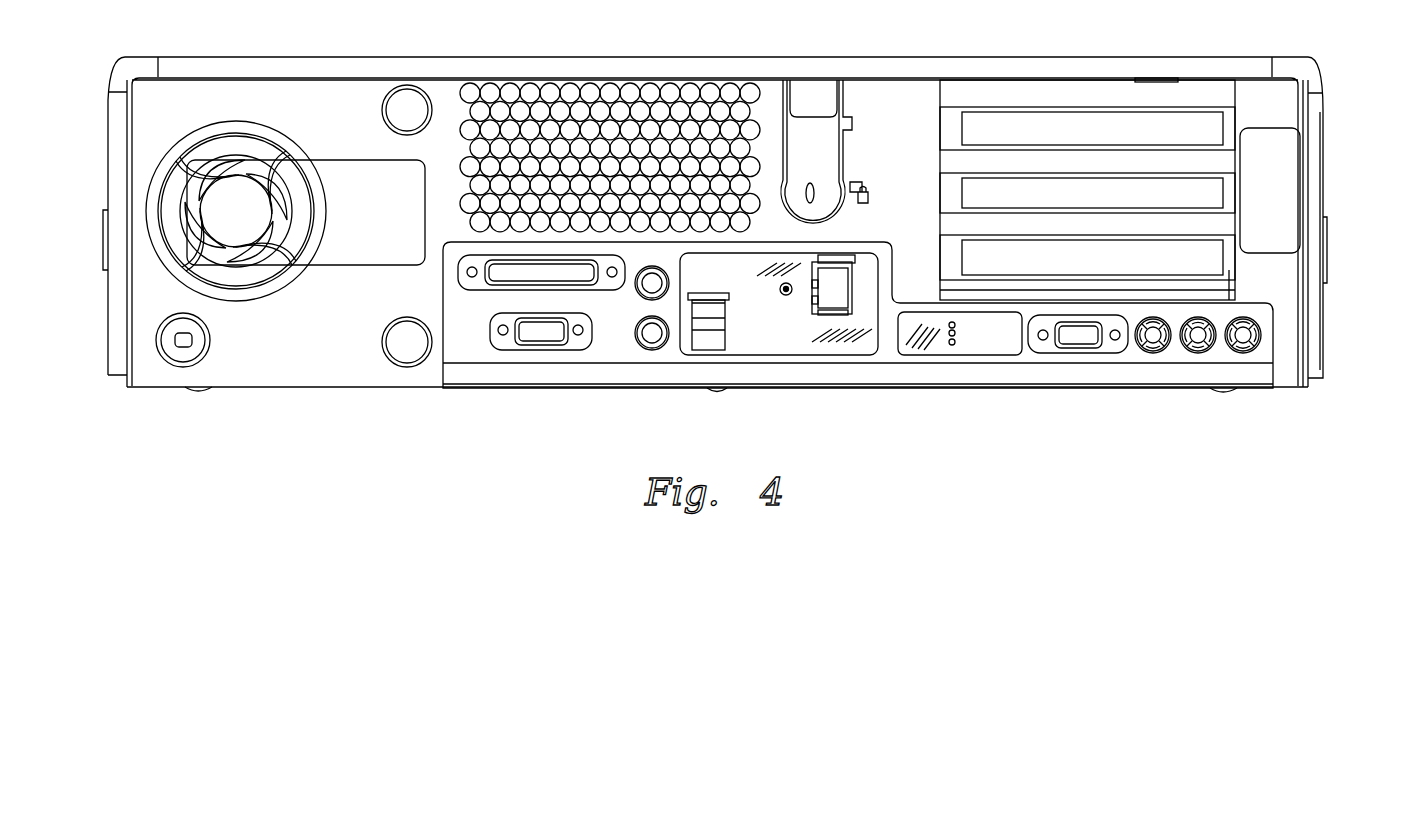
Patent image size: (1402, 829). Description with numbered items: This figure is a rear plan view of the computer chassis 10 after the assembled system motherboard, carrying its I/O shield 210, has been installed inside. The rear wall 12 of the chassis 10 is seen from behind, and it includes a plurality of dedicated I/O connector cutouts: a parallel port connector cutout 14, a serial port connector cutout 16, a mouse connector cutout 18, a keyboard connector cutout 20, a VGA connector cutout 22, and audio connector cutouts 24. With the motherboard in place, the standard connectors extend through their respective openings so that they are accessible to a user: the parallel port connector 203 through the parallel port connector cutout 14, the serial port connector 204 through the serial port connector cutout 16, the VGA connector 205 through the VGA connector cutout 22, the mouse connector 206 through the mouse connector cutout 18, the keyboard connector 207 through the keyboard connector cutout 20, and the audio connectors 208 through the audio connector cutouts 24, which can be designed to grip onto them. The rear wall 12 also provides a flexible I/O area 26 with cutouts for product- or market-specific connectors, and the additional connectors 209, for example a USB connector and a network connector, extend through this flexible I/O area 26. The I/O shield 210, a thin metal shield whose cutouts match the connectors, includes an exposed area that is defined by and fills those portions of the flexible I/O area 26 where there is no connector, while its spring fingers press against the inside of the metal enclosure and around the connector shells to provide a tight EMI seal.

The computer chassis 10 is at (1340, 249).
The rear wall 12 is at (285, 357).
The parallel port connector cutout 14 is at (508, 346).
The serial port connector cutout 16 is at (539, 386).
The mouse connector cutout 18 is at (668, 347).
The keyboard connector cutout 20 is at (663, 387).
The VGA connector cutout 22 is at (1075, 375).
The audio connector cutouts 24 is at (1153, 353).
The flexible I/O area 26 is at (779, 344).
The parallel port connector 203 is at (493, 288).
The serial port connector 204 is at (543, 337).
The VGA connector 205 is at (1080, 353).
The mouse connector 206 is at (662, 284).
The keyboard connector 207 is at (652, 337).
The audio connectors 208 is at (1240, 353).
The additional connectors 209 is at (811, 300).
The I/O shield 210 is at (845, 343).